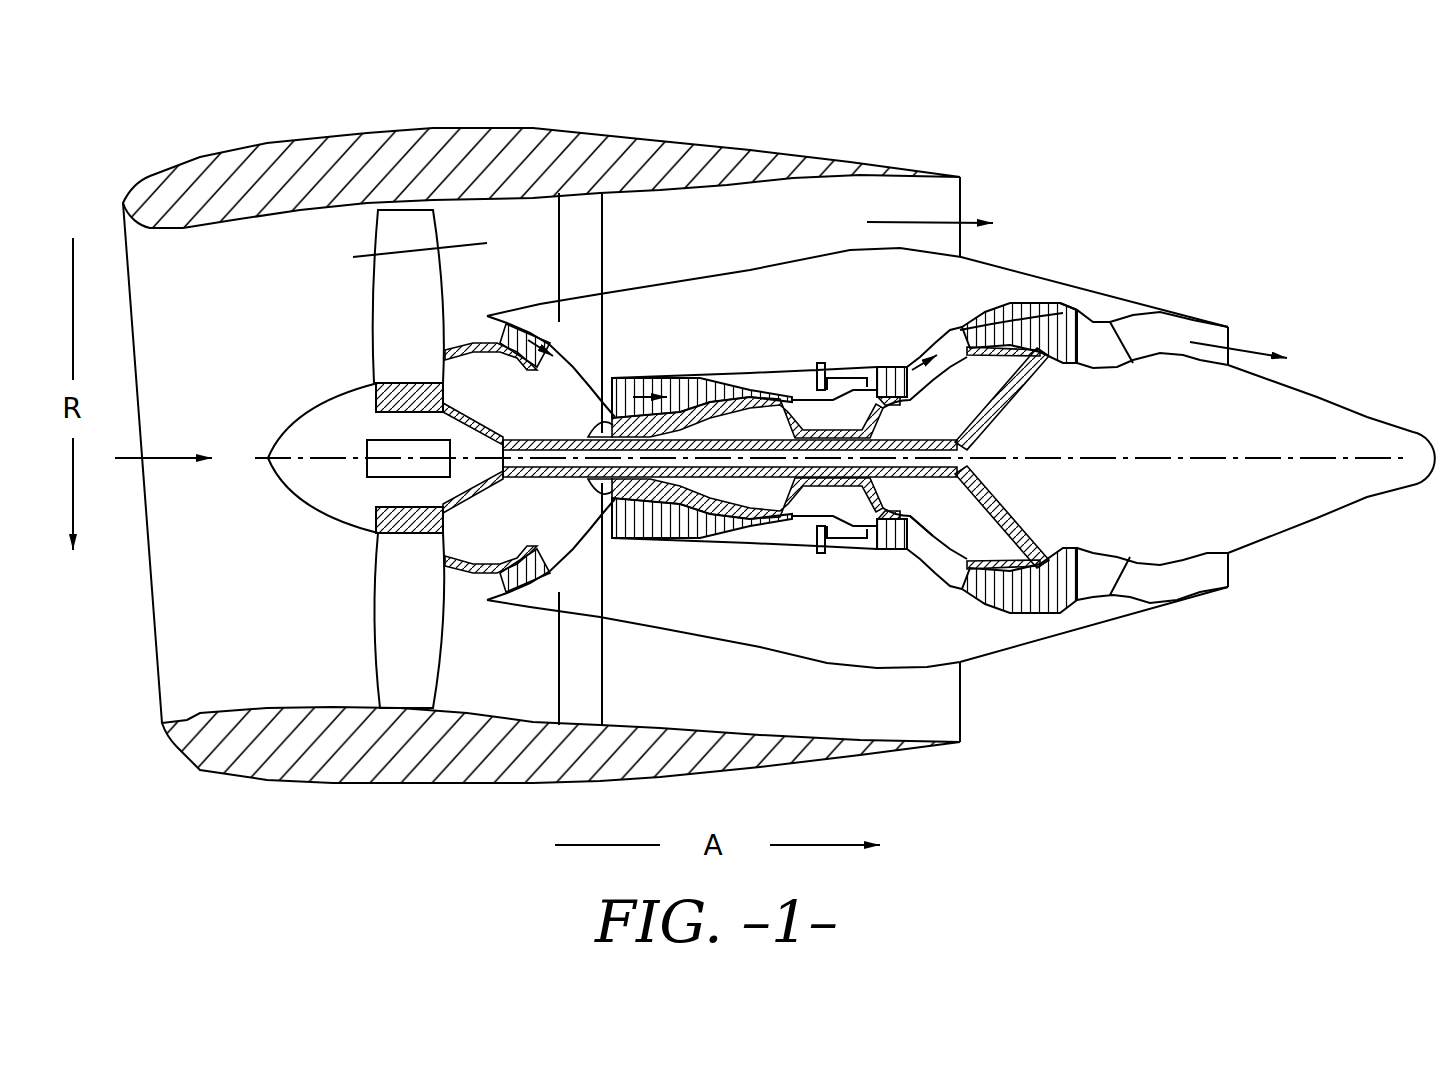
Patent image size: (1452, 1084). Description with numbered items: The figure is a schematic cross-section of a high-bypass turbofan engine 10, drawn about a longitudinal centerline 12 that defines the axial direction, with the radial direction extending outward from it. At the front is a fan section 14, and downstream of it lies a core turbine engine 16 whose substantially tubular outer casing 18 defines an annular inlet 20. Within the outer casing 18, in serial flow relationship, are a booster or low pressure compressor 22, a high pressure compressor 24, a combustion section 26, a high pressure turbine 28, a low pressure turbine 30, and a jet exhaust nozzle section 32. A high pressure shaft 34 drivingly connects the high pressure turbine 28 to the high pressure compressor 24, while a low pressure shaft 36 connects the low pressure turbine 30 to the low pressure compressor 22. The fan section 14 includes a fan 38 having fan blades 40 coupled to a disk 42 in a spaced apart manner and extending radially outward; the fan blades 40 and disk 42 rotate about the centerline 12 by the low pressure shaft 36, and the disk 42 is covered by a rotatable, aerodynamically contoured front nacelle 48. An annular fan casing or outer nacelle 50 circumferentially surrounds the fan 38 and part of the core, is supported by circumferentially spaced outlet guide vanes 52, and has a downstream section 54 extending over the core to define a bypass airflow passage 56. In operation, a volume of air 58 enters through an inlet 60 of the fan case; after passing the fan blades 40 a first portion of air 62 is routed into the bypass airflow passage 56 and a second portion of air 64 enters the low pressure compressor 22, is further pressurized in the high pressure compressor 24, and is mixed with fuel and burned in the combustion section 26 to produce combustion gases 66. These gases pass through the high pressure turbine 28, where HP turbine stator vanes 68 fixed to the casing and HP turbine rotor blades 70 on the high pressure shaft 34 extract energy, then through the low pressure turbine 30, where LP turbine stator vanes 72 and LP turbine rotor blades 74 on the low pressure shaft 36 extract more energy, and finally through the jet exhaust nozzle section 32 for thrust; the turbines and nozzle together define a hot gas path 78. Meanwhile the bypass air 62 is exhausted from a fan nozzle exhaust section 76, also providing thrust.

The turbofan engine 10 is at (1215, 207).
The longitudinal centerline 12 is at (1140, 457).
The fan section 14 is at (455, 118).
The core turbine engine 16 is at (777, 325).
The outer casing 18 is at (795, 662).
The annular inlet 20 is at (490, 587).
The low pressure compressor 22 is at (560, 553).
The high pressure compressor 24 is at (637, 538).
The combustion section 26 is at (837, 538).
The high pressure turbine 28 is at (913, 540).
The low pressure turbine 30 is at (1063, 630).
The jet exhaust nozzle section 32 is at (1237, 333).
The high pressure shaft 34 is at (900, 405).
The low pressure shaft 36 is at (557, 437).
The fan 38 is at (357, 297).
The fan blades 40 is at (370, 650).
The disk 42 is at (377, 393).
The front nacelle 48 is at (293, 427).
The outer nacelle 50 is at (443, 787).
The outlet guide vanes 52 is at (605, 218).
The downstream section 54 is at (765, 148).
The bypass airflow passage 56 is at (721, 242).
The volume of air 58 is at (158, 457).
The inlet 60 is at (162, 697).
The first portion of air 62 is at (390, 243).
The second portion of air 64 is at (468, 330).
The combustion gases 66 is at (1007, 303).
The HP turbine stator vanes 68 is at (877, 548).
The HP turbine rotor blades 70 is at (893, 547).
The LP turbine stator vanes 72 is at (967, 583).
The LP turbine rotor blades 74 is at (980, 590).
The fan nozzle exhaust section 76 is at (962, 200).
The hot gas path 78 is at (950, 340).